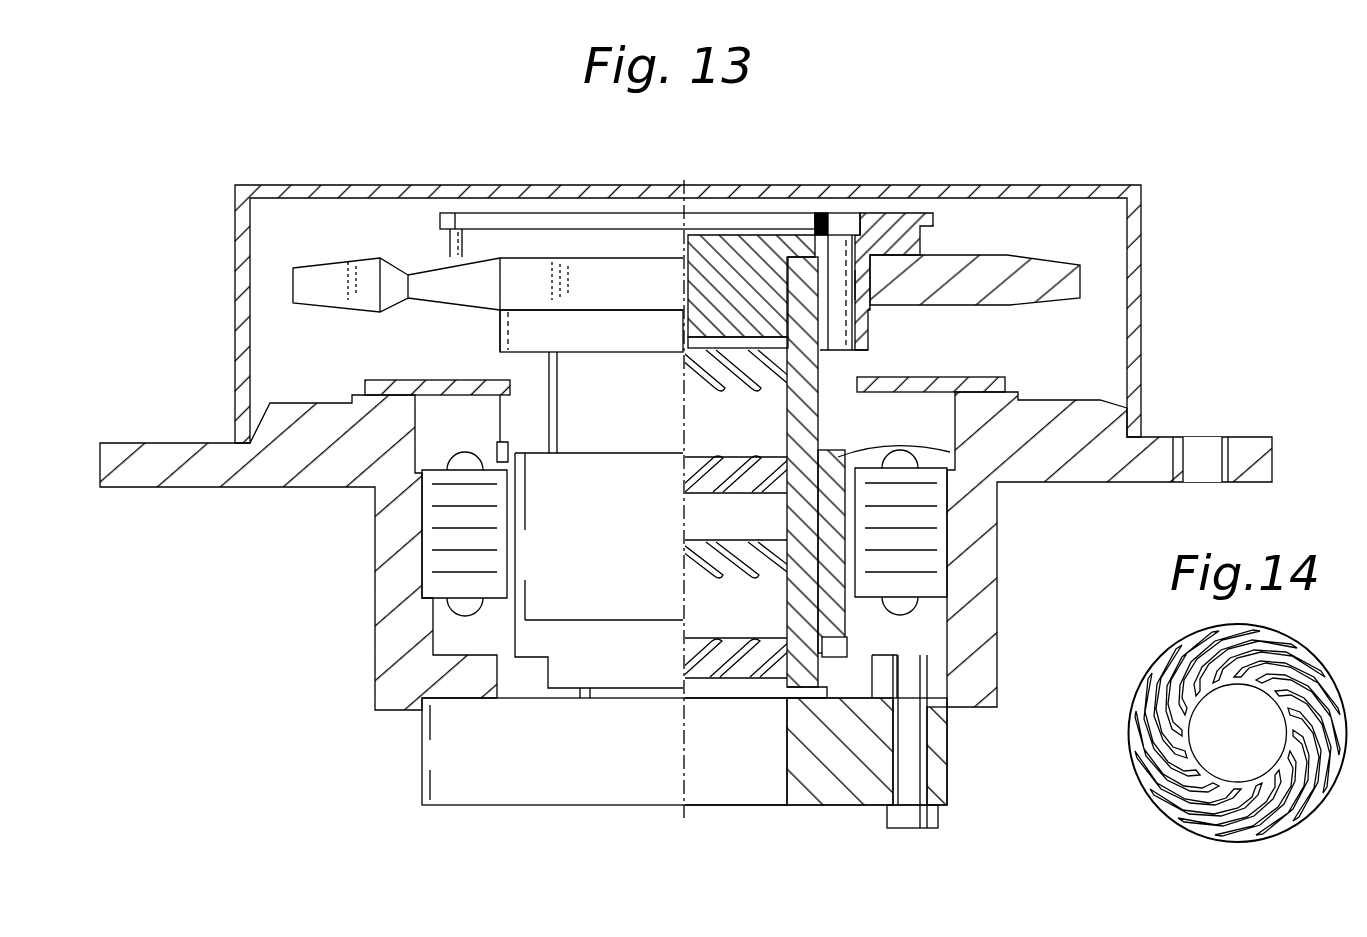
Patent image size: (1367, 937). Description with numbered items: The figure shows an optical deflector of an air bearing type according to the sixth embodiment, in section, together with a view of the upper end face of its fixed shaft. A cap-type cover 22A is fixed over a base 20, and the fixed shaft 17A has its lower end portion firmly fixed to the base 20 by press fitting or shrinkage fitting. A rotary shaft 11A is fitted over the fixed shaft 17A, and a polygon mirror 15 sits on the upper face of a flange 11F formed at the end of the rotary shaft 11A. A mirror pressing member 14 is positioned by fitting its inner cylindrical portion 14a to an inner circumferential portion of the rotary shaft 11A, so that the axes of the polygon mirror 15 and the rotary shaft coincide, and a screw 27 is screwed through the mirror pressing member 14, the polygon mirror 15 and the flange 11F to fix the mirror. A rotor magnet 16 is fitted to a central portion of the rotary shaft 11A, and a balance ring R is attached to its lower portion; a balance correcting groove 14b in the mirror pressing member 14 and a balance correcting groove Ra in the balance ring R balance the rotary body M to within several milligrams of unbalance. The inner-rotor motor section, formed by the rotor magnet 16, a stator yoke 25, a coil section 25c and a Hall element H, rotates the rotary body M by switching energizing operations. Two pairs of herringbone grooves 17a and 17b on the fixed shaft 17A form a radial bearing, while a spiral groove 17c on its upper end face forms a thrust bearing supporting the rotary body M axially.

In FIG. 13, the cover 22A is at (343, 193).
In FIG. 13, the flange 11F is at (528, 323).
In FIG. 13, the upper herringbone grooves 17a is at (690, 455).
In FIG. 13, the inner cylindrical portion 14a is at (730, 283).
In FIG. 13, the balance correcting groove 14b is at (870, 215).
In FIG. 13, the rotary body M is at (877, 203).
In FIG. 13, the mirror pressing member 14 is at (915, 213).
In FIG. 13, the polygon mirror 15 is at (1040, 263).
In FIG. 13, the screw 27 is at (847, 283).
In FIG. 13, the rotary shaft 11A is at (848, 362).
In FIG. 13, the rotor magnet 16 is at (824, 456).
In FIG. 13, the stator yoke 25 is at (925, 492).
In FIG. 13, the Hall element H is at (500, 440).
In FIG. 13, the balance ring R is at (850, 633).
In FIG. 13, the coil section 25c is at (906, 600).
In FIG. 13, the balance correcting groove Ra is at (828, 700).
In FIG. 13, the lower herringbone grooves 17b is at (700, 572).
In FIG. 13, the fixed shaft 17A is at (739, 790).
In FIG. 13, the base 20 is at (858, 792).
In FIG. 14, the spiral groove 17c is at (1221, 831).